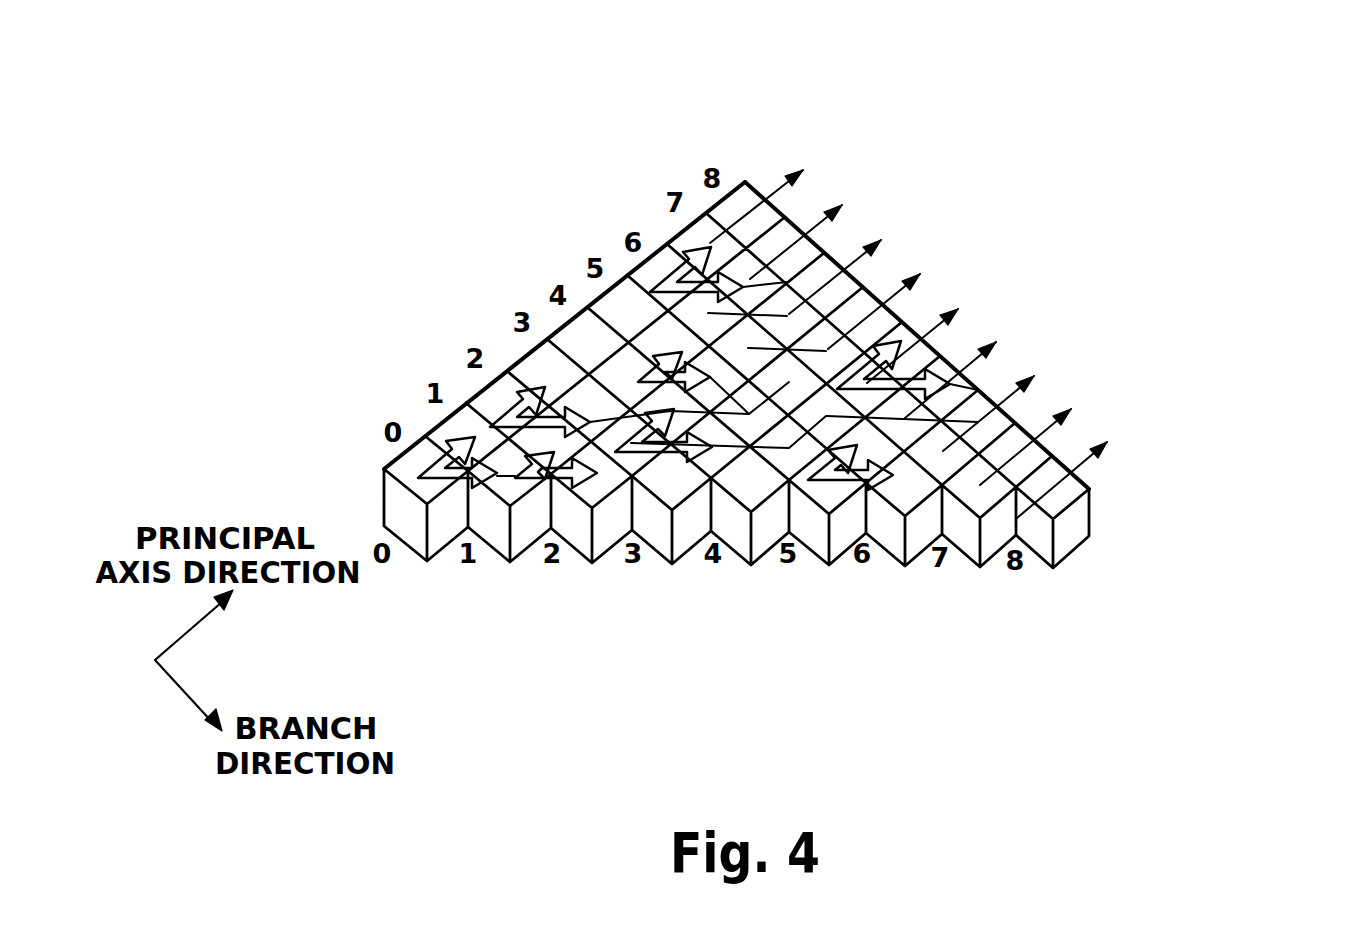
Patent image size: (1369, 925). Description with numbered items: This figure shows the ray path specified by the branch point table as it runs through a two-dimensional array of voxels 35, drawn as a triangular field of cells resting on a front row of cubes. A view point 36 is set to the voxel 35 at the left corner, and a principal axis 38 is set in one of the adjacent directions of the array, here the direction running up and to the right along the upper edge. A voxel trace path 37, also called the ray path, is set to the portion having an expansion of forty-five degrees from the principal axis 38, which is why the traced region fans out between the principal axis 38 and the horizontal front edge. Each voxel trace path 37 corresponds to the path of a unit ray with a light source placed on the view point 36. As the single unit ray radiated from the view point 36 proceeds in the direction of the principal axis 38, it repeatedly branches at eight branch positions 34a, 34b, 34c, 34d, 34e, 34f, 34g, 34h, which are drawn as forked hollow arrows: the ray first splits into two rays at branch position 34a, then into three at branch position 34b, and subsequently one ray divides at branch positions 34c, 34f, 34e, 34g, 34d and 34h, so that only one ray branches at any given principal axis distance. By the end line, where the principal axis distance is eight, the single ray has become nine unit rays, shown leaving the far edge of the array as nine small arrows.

The branch position 34a is at (437, 478).
The branch position 34b is at (563, 487).
The branch position 34c is at (502, 380).
The branch position 34d is at (672, 265).
The branch position 34e is at (630, 372).
The branch position 34f is at (672, 458).
The branch position 34g is at (832, 481).
The branch position 34h is at (912, 370).
The voxel 35 is at (1085, 517).
The view point 36 is at (393, 498).
The voxel trace path 37 is at (1122, 441).
The principal axis 38 is at (783, 183).